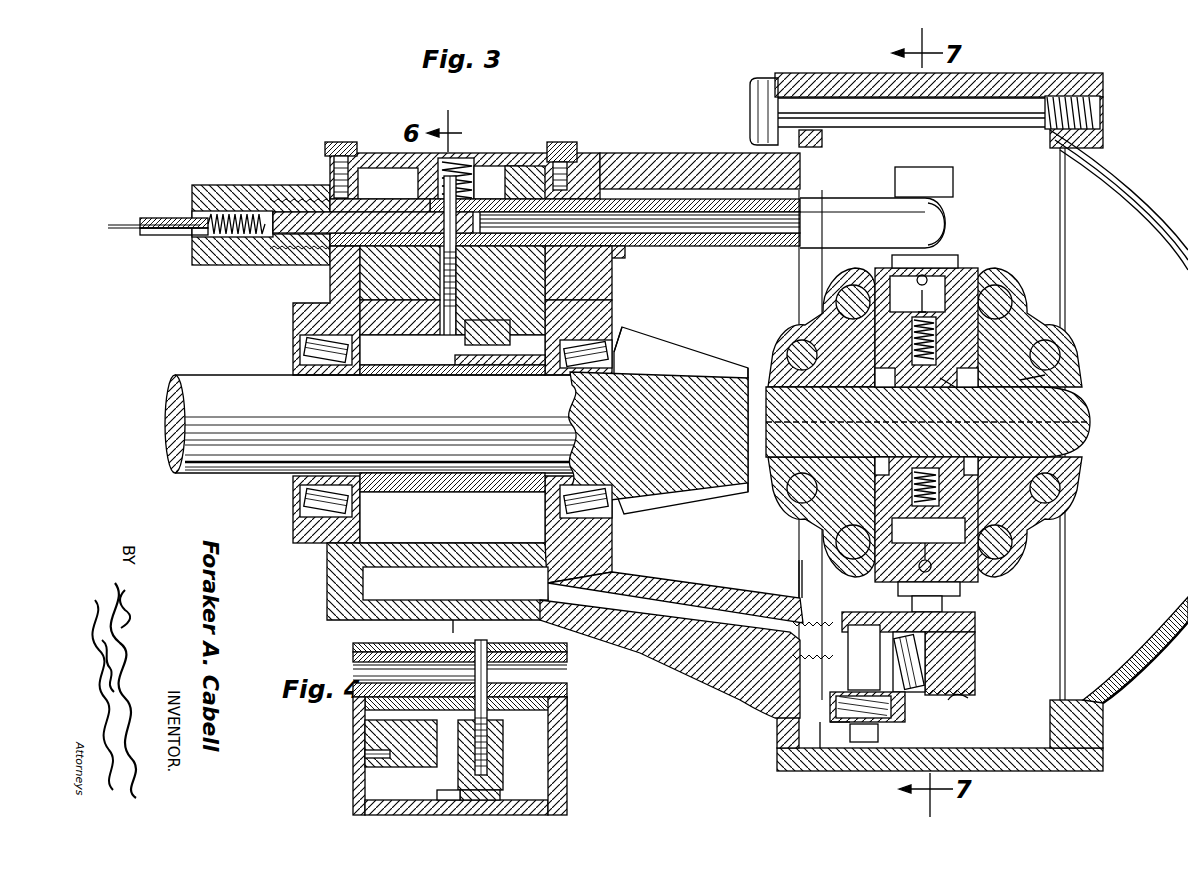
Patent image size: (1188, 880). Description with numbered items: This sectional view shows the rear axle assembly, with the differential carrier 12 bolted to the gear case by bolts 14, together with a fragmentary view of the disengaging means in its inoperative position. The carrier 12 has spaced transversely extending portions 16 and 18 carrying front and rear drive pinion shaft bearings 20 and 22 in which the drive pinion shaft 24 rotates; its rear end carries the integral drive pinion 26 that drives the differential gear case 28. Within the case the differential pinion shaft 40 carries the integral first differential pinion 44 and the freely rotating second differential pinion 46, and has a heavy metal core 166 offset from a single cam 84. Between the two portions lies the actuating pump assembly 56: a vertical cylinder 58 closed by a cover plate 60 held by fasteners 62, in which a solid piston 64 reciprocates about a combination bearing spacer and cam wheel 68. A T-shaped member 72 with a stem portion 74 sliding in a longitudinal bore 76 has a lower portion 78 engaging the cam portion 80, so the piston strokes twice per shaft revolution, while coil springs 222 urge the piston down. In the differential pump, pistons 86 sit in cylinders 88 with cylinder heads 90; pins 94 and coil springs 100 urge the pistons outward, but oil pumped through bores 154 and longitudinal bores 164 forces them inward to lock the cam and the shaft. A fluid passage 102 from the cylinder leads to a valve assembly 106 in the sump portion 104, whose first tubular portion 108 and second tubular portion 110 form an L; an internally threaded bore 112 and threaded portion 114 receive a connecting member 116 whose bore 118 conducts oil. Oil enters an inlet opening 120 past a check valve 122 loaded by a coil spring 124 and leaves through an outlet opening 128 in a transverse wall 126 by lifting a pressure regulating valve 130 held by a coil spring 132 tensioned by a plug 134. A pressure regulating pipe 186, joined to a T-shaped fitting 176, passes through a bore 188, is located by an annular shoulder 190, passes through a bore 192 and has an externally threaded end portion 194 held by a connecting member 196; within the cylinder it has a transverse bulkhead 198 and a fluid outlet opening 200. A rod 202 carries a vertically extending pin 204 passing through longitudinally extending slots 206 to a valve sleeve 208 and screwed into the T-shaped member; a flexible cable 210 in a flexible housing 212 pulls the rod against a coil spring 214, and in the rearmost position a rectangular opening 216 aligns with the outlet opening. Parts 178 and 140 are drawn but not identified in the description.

In FIG. 3, the differential carrier 12 is at (656, 152).
In FIG. 3, the bolts 14 is at (836, 96).
In FIG. 3, the transversely extending portion 16 is at (293, 310).
In FIG. 4, the transversely extending portion 16 is at (353, 770).
In FIG. 3, the transversely extending portion 18 is at (603, 312).
In FIG. 4, the transversely extending portion 18 is at (560, 764).
In FIG. 3, the front drive pinion shaft bearing 20 is at (300, 488).
In FIG. 3, the rear drive pinion shaft bearing 22 is at (612, 500).
In FIG. 3, the drive pinion shaft 24 is at (172, 456).
In FIG. 3, the drive pinion 26 is at (672, 355).
In FIG. 3, the differential gear case 28 is at (1044, 306).
In FIG. 3, the differential pinion shaft 40 is at (1072, 396).
In FIG. 3, the first differential pinion 44 is at (802, 518).
In FIG. 3, the second differential pinion 46 is at (1030, 387).
In FIG. 3, the actuating pump assembly 56 is at (497, 178).
In FIG. 3, the cylinder 58 is at (546, 292).
In FIG. 3, the cover plate 60 is at (384, 153).
In FIG. 3, the fasteners 62 is at (345, 142).
In FIG. 3, the piston 64 is at (525, 550).
In FIG. 3, the combination bearing spacer and cam wheel 68 is at (390, 375).
In FIG. 3, the T-shaped member 72 is at (466, 312).
In FIG. 4, the T-shaped member 72 is at (502, 762).
In FIG. 3, the stem portion 74 is at (396, 307).
In FIG. 4, the stem portion 74 is at (416, 775).
In FIG. 3, the longitudinal bore 76 is at (386, 284).
In FIG. 4, the longitudinal bore 76 is at (365, 753).
In FIG. 3, the lower portion 78 is at (472, 332).
In FIG. 4, the lower portion 78 is at (492, 801).
In FIG. 3, the cam portion 80 is at (470, 366).
In FIG. 4, the cam portion 80 is at (440, 795).
In FIG. 3, the cam 84 is at (950, 380).
In FIG. 3, the pistons 86 is at (898, 387).
In FIG. 3, the cylinders 88 is at (1000, 318).
In FIG. 3, the cylinder heads 90 is at (947, 266).
In FIG. 3, the pins 94 is at (960, 356).
In FIG. 3, the coil springs 100 is at (875, 350).
In FIG. 3, the fluid passage 102 is at (692, 598).
In FIG. 3, the sump portion 104 is at (1016, 748).
In FIG. 3, the valve assembly 106 is at (968, 698).
In FIG. 3, the first tubular portion 108 is at (906, 710).
In FIG. 3, the second tubular portion 110 is at (953, 628).
In FIG. 3, the internally threaded bore 112 is at (802, 680).
In FIG. 3, the internally threaded portion 114 is at (793, 660).
In FIG. 3, the connecting member 116 is at (805, 625).
In FIG. 3, the bore 118 is at (793, 630).
In FIG. 3, the inlet opening 120 is at (862, 742).
In FIG. 3, the check valve 122 is at (838, 748).
In FIG. 3, the coil spring 124 is at (878, 731).
In FIG. 3, the transverse wall 126 is at (868, 598).
In FIG. 3, the outlet opening 128 is at (848, 638).
In FIG. 3, the pressure regulating valve 130 is at (912, 612).
In FIG. 3, the coil spring 132 is at (912, 646).
In FIG. 3, the plug 134 is at (968, 668).
In FIG. 3, the thread 140 is at (972, 682).
In FIG. 3, the bores 154 is at (892, 262).
In FIG. 3, the longitudinal bores 164 is at (917, 293).
In FIG. 3, the heavy metal core 166 is at (1088, 421).
In FIG. 3, the T-shaped fitting 176 is at (950, 214).
In FIG. 3, the block 178 is at (955, 182).
In FIG. 3, the pressure regulating pipe 186 is at (836, 198).
In FIG. 4, the pressure regulating pipe 186 is at (567, 657).
In FIG. 3, the bore 188 is at (592, 196).
In FIG. 3, the annular shoulder 190 is at (622, 252).
In FIG. 3, the bore 192 is at (325, 199).
In FIG. 3, the externally threaded end portion 194 is at (275, 199).
In FIG. 3, the connecting member 196 is at (212, 257).
In FIG. 3, the transverse bulkhead 198 is at (500, 222).
In FIG. 4, the transverse bulkhead 198 is at (567, 702).
In FIG. 3, the fluid outlet opening 200 is at (507, 246).
In FIG. 4, the fluid outlet opening 200 is at (567, 679).
In FIG. 3, the rod 202 is at (300, 236).
In FIG. 4, the rod 202 is at (353, 667).
In FIG. 3, the vertically extending pin 204 is at (442, 222).
In FIG. 4, the vertically extending pin 204 is at (475, 668).
In FIG. 3, the longitudinally extending slots 206 is at (466, 246).
In FIG. 4, the longitudinally extending slots 206 is at (428, 666).
In FIG. 3, the valve sleeve 208 is at (396, 187).
In FIG. 4, the valve sleeve 208 is at (546, 644).
In FIG. 3, the flexible cable 210 is at (108, 225).
In FIG. 3, the flexible housing 212 is at (160, 218).
In FIG. 3, the coil spring 214 is at (226, 214).
In FIG. 3, the rectangular opening 216 is at (500, 194).
In FIG. 3, the coil springs 222 is at (458, 170).